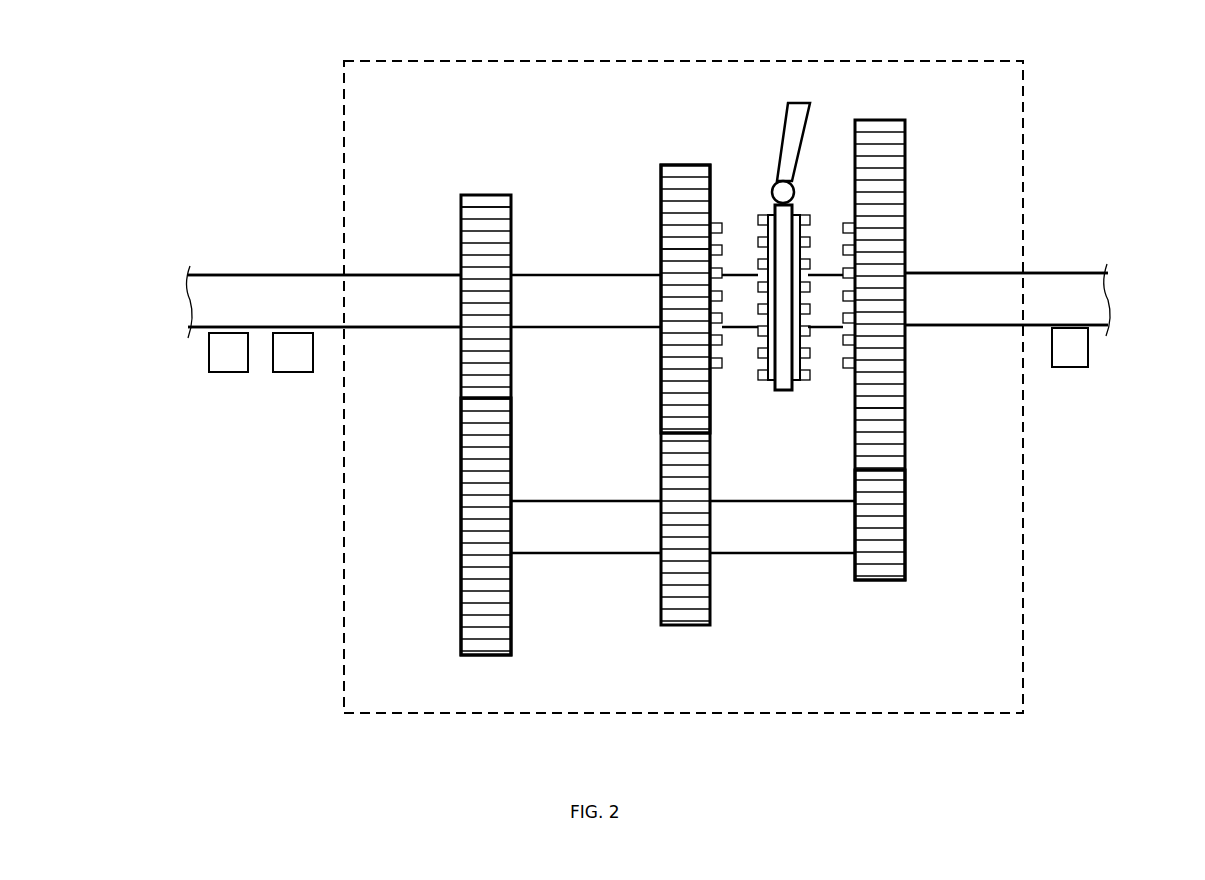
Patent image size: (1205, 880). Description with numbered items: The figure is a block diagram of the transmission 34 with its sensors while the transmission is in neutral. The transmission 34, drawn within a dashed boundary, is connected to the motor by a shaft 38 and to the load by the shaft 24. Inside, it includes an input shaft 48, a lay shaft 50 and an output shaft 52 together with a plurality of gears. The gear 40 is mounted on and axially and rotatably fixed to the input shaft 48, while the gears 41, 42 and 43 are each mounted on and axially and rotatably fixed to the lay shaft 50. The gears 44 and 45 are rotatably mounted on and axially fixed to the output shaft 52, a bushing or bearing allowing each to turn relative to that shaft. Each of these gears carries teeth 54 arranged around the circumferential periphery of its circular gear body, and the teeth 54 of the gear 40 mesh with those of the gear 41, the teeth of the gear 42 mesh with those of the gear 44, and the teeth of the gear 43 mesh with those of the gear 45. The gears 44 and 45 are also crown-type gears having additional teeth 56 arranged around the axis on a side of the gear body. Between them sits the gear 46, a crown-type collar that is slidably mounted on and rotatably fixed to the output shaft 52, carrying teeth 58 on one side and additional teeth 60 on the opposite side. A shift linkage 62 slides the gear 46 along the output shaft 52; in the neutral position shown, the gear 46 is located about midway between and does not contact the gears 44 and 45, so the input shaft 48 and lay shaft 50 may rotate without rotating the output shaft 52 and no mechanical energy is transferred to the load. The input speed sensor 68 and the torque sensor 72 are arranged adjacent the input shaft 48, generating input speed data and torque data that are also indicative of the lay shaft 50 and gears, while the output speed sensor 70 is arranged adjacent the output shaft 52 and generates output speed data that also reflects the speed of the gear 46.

The transmission 34 is at (984, 60).
The shaft 38 is at (205, 274).
The input shaft 48 is at (324, 301).
The shaft 24 is at (1096, 270).
The output shaft 52 is at (1006, 299).
The torque sensor 72 is at (240, 361).
The input speed sensor 68 is at (304, 361).
The output speed sensor 70 is at (1081, 356).
The gear 40 is at (512, 236).
The gear 41 is at (459, 626).
The gear 42 is at (659, 608).
The gear 44 is at (659, 195).
The gear 45 is at (907, 174).
The gear 43 is at (908, 560).
The teeth 54 is at (500, 302).
The additional teeth 56 is at (723, 248).
The gear 46 is at (770, 393).
The teeth 58 is at (766, 373).
The additional teeth 60 is at (803, 373).
The shift linkage 62 is at (786, 123).
The lay shaft 50 is at (778, 556).